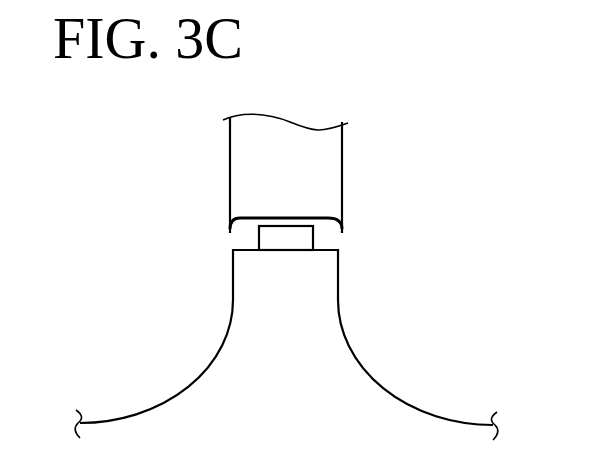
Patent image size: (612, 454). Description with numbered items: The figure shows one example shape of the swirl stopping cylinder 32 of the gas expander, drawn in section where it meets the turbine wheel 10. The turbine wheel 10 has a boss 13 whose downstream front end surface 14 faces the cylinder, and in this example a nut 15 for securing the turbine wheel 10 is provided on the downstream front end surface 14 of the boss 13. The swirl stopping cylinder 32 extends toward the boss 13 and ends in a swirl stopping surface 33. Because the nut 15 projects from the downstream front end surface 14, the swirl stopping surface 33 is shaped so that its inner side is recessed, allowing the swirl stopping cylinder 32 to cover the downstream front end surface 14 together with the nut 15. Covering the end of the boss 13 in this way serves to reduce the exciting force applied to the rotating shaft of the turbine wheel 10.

The turbine wheel 10 is at (380, 352).
The boss 13 is at (233, 273).
The downstream front end surface 14 is at (258, 249).
The nut 15 is at (290, 226).
The swirl stopping cylinder 32 is at (363, 163).
The swirl stopping surface 33 is at (325, 221).